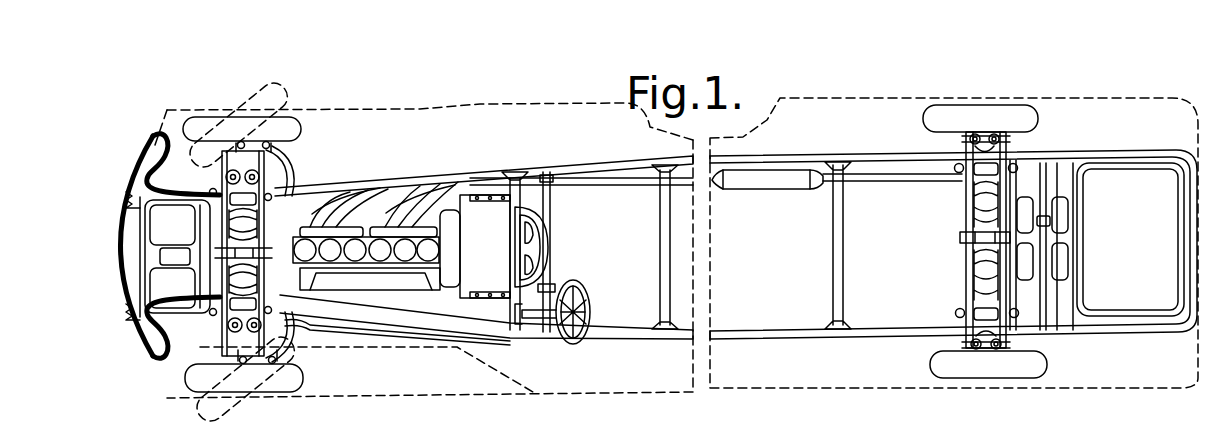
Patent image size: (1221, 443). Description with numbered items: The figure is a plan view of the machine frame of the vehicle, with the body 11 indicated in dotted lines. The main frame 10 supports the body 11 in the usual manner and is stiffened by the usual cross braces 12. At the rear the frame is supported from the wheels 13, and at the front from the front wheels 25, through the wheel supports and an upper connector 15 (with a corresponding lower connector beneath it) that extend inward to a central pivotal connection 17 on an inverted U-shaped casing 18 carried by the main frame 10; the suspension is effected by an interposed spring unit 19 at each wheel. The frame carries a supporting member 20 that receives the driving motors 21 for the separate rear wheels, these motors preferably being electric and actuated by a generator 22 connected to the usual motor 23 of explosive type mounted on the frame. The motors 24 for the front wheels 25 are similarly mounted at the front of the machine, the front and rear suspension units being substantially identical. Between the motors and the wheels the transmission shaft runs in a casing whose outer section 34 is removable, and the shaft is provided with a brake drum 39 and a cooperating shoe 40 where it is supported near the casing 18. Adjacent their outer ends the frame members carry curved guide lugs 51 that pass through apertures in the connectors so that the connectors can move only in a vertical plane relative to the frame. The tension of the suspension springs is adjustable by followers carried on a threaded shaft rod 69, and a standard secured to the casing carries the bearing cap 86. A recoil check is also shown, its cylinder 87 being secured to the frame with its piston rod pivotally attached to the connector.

The main frame 10 is at (540, 339).
The body 11 is at (880, 372).
The cross braces 12 is at (661, 230).
The wheels 13 is at (1035, 118).
The upper connector 15 is at (283, 180).
The central pivotal connection 17 is at (215, 250).
The inverted U-shaped casing 18 is at (285, 193).
The spring unit 19 is at (240, 337).
The supporting member 20 is at (187, 263).
The driving motors 21 is at (1063, 203).
The generator 22 is at (537, 220).
The motor of explosive type 23 is at (347, 187).
The motors for the front wheels 24 is at (163, 218).
The front wheels 25 is at (273, 124).
The outer section of the casing 34 is at (1000, 217).
The brake drum 39 is at (962, 237).
The brake shoe 40 is at (233, 200).
The curved guide lugs 51 is at (210, 313).
The shaft rod 69 is at (252, 143).
The bearing cap 86 is at (987, 140).
The cylinder 87 is at (272, 195).